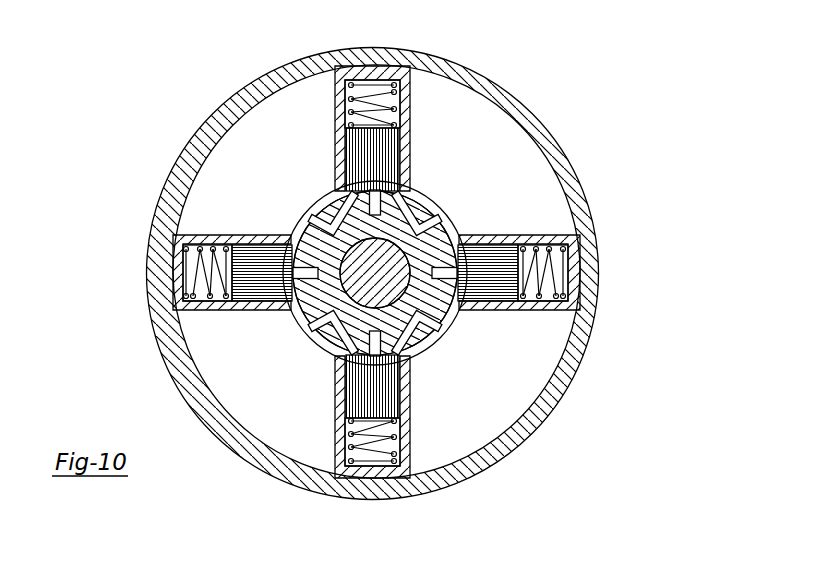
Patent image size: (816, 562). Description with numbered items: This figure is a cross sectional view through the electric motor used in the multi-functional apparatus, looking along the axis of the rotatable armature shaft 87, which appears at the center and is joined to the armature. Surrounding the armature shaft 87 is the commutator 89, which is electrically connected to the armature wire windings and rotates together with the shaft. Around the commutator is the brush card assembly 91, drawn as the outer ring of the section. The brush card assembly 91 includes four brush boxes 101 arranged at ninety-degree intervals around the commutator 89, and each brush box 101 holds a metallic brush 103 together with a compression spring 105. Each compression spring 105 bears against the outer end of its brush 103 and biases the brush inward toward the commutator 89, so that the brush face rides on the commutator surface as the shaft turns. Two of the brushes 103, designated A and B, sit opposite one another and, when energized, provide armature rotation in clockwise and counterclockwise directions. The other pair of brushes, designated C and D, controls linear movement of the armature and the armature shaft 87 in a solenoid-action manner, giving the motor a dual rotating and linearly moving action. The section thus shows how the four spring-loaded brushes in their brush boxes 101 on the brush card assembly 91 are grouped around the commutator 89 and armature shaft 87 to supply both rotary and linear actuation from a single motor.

The armature shaft 87 is at (392, 292).
The commutator 89 is at (303, 231).
The brush card assembly 91 is at (517, 160).
The brush box 101 is at (345, 108).
The brush 103 is at (488, 284).
The compression spring 105 is at (558, 275).
The brush A is at (380, 158).
The brush B is at (392, 395).
The brush C is at (258, 288).
The brush D is at (485, 262).